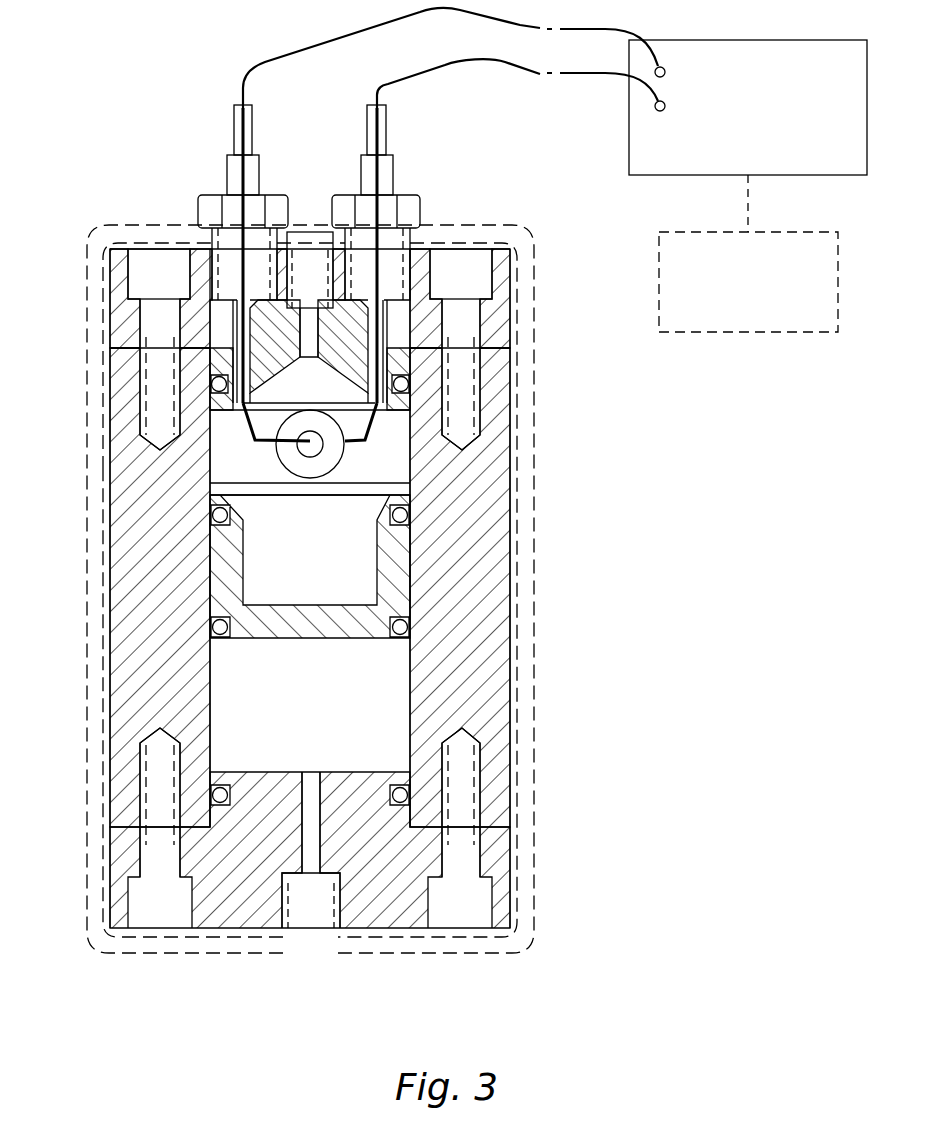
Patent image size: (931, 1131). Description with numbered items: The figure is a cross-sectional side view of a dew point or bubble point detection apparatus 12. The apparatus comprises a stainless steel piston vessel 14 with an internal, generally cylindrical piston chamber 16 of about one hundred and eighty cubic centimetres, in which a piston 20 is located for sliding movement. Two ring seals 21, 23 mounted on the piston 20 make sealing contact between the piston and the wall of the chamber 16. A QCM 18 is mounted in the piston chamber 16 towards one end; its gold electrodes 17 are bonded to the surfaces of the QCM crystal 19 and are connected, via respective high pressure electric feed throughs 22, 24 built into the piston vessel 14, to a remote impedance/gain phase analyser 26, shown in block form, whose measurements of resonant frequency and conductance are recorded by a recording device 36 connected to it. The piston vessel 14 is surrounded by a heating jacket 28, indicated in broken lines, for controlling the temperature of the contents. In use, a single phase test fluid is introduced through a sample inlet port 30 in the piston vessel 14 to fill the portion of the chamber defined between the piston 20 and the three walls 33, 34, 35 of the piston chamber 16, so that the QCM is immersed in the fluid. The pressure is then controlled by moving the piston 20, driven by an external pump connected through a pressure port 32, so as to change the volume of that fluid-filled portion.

The dew point or bubble point detection apparatus 12 is at (552, 588).
The piston vessel 14 is at (110, 645).
The piston chamber 16 is at (405, 479).
The electrodes 17 is at (300, 447).
The QCM 18 is at (355, 451).
The QCM crystal 19 is at (320, 443).
The piston 20 is at (287, 605).
The ring seal 21 is at (408, 519).
The high pressure electric feed through 22 is at (357, 152).
The ring seal 23 is at (408, 627).
The high pressure electric feed through 24 is at (215, 182).
The impedance/gain phase analyser 26 is at (768, 117).
The heating jacket 28 is at (540, 840).
The sample inlet port 30 is at (305, 248).
The pressure port 32 is at (312, 928).
The wall of the piston chamber 33 is at (173, 604).
The wall of the piston chamber 34 is at (478, 604).
The wall of the piston chamber 35 is at (293, 349).
The recording device 36 is at (768, 271).